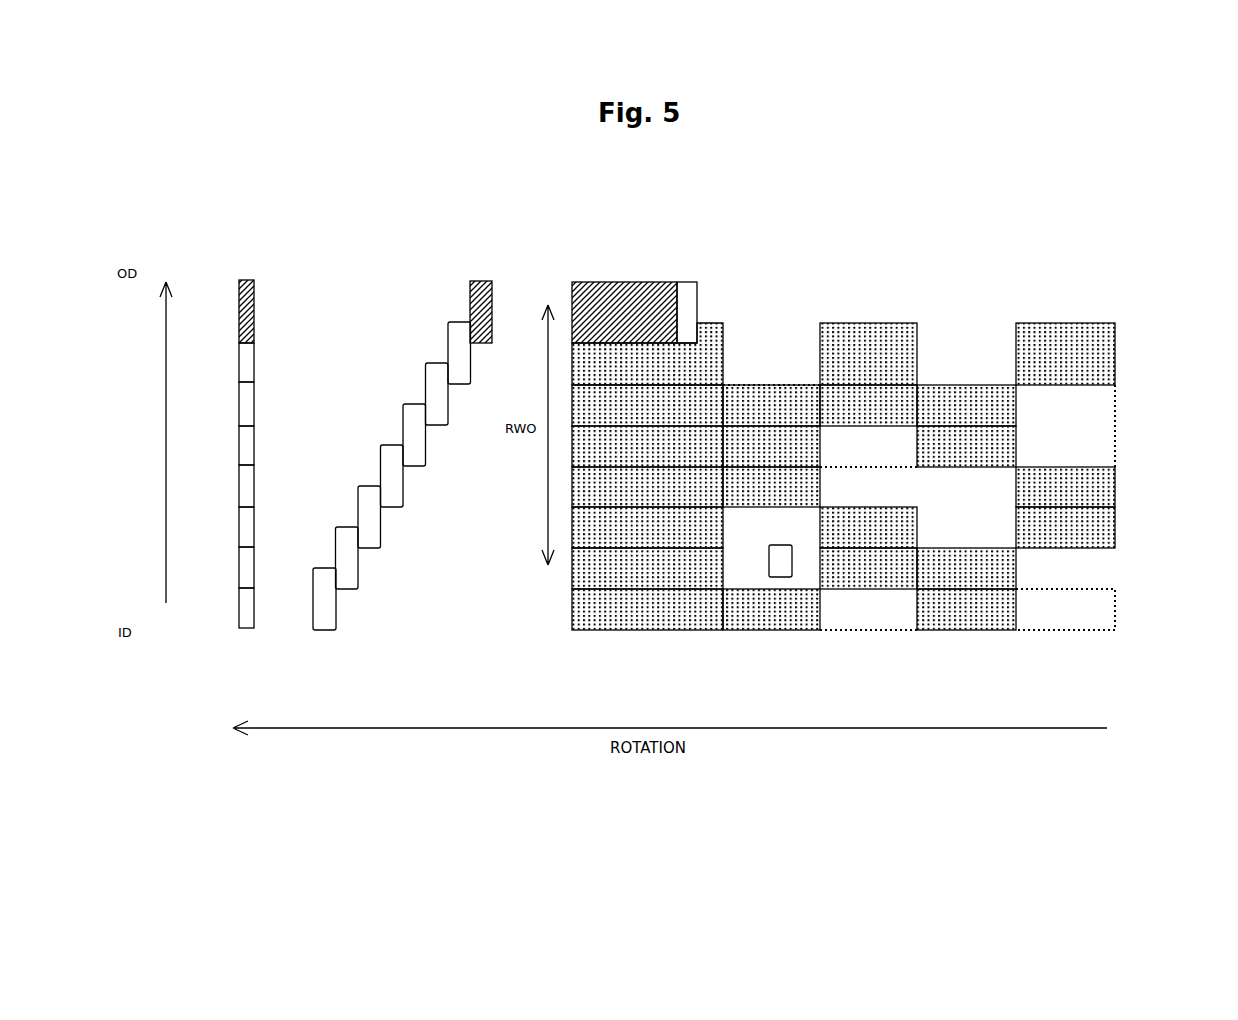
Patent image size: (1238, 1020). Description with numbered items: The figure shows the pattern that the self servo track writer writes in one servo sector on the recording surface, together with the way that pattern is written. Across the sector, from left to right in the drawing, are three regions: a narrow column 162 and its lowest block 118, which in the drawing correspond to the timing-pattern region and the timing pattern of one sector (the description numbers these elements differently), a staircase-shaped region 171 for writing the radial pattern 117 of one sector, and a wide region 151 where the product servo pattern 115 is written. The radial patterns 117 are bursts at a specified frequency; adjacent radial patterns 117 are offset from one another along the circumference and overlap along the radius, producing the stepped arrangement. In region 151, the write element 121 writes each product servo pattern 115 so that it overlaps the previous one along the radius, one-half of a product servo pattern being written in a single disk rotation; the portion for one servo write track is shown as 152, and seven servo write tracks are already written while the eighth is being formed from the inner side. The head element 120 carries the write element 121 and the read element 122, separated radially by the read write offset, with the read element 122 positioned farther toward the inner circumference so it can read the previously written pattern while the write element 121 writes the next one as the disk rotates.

The product servo pattern 115 is at (1118, 422).
The radial pattern 117 is at (325, 630).
The servo sector 118 is at (250, 630).
The head element 120 is at (757, 275).
The write element 121 is at (700, 308).
The read element 122 is at (780, 545).
The region where the product servo pattern is written 151 is at (1125, 258).
The product servo pattern for one servo write track 152 is at (1118, 600).
The servo wedge 162 is at (268, 258).
The region for writing the radial pattern 171 is at (497, 258).